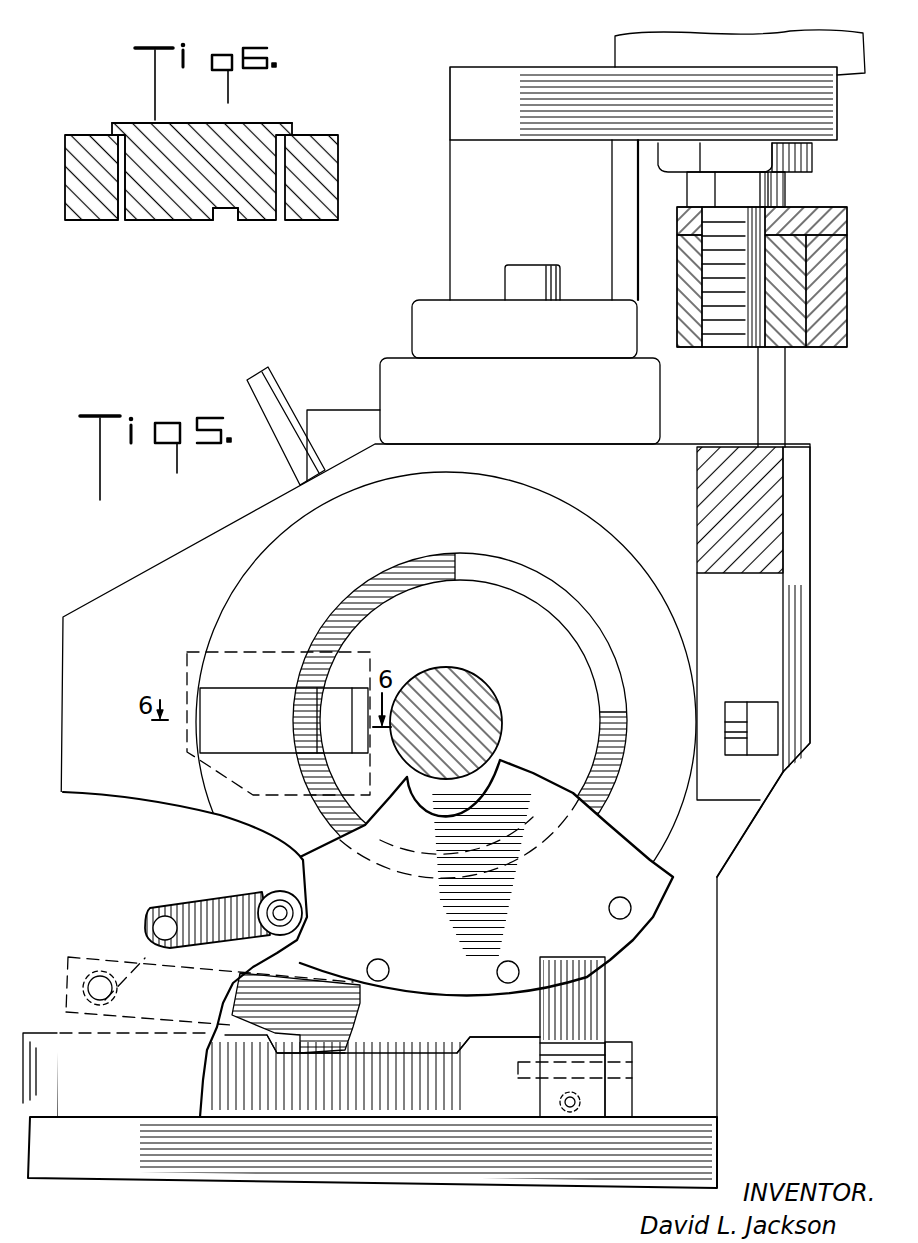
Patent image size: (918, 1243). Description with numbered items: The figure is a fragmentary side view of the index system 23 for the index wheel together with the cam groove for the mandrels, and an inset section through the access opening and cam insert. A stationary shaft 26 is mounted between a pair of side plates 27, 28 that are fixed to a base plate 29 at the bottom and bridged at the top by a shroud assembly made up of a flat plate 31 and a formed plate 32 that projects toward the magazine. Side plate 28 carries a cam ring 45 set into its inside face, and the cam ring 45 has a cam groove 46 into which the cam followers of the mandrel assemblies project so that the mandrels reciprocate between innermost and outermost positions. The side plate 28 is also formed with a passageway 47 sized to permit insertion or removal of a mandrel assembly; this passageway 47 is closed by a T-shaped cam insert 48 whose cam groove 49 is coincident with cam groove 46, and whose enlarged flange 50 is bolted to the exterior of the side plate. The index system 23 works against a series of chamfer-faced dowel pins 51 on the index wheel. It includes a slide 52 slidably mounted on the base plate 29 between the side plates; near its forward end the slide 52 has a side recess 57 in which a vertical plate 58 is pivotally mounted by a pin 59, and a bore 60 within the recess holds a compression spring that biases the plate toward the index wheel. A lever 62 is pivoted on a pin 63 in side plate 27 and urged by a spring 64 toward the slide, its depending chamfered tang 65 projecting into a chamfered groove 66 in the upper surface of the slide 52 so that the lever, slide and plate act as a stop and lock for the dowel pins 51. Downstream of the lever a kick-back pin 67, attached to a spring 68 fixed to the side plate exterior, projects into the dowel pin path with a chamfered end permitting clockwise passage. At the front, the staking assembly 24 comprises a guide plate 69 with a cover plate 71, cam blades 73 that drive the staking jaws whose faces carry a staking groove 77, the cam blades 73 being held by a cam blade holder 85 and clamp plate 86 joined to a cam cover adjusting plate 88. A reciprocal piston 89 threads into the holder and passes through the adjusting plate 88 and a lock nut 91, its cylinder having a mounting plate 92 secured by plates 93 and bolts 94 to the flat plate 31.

In FIG. 5, the index system 23 is at (403, 990).
In FIG. 5, the staking assembly 24 is at (813, 642).
In FIG. 5, the stationary shaft 26 is at (488, 713).
In FIG. 5, the side plate 27 is at (93, 798).
In FIG. 6, the side plate 28 is at (80, 137).
In FIG. 5, the side plate 28 is at (150, 580).
In FIG. 5, the base plate 29 is at (317, 1173).
In FIG. 5, the flat plate 31 is at (384, 362).
In FIG. 5, the formed plate 32 is at (338, 410).
In FIG. 5, the cam ring 45 is at (237, 588).
In FIG. 5, the cam groove 46 is at (400, 578).
In FIG. 6, the passageway 47 is at (121, 224).
In FIG. 5, the passageway 47 is at (266, 700).
In FIG. 6, the cam insert 48 is at (205, 140).
In FIG. 5, the cam insert 48 is at (213, 813).
In FIG. 6, the cam groove 49 is at (225, 222).
In FIG. 5, the cam groove 49 is at (303, 700).
In FIG. 6, the enlarged flange 50 is at (292, 132).
In FIG. 5, the enlarged flange 50 is at (187, 655).
In FIG. 5, the dowel pins 51 is at (372, 960).
In FIG. 5, the slide 52 is at (388, 1108).
In FIG. 5, the side recess 57 is at (543, 1088).
In FIG. 5, the vertical plate 58 is at (605, 988).
In FIG. 5, the pin 59 is at (633, 1060).
In FIG. 5, the bore 60 is at (570, 1113).
In FIG. 5, the lever 62 is at (355, 1010).
In FIG. 5, the pin 63 is at (105, 960).
In FIG. 5, the spring 64 is at (137, 970).
In FIG. 5, the chamfered tang 65 is at (347, 1053).
In FIG. 5, the chamfered groove 66 is at (425, 1055).
In FIG. 5, the kick-back pin 67 is at (284, 892).
In FIG. 5, the spring 68 is at (180, 913).
In FIG. 5, the guide plate 69 is at (768, 787).
In FIG. 5, the cover plate 71 is at (800, 483).
In FIG. 5, the cam blades 73 is at (785, 402).
In FIG. 5, the staking groove 77 is at (722, 727).
In FIG. 5, the cam blade holder 85 is at (685, 273).
In FIG. 5, the clamp plate 86 is at (833, 260).
In FIG. 5, the cam cover adjusting plate 88 is at (837, 220).
In FIG. 5, the reciprocal piston 89 is at (722, 347).
In FIG. 5, the lock nut 91 is at (688, 190).
In FIG. 5, the mounting plate 92 is at (450, 105).
In FIG. 5, the plates 93 is at (450, 180).
In FIG. 5, the bolts 94 is at (505, 282).